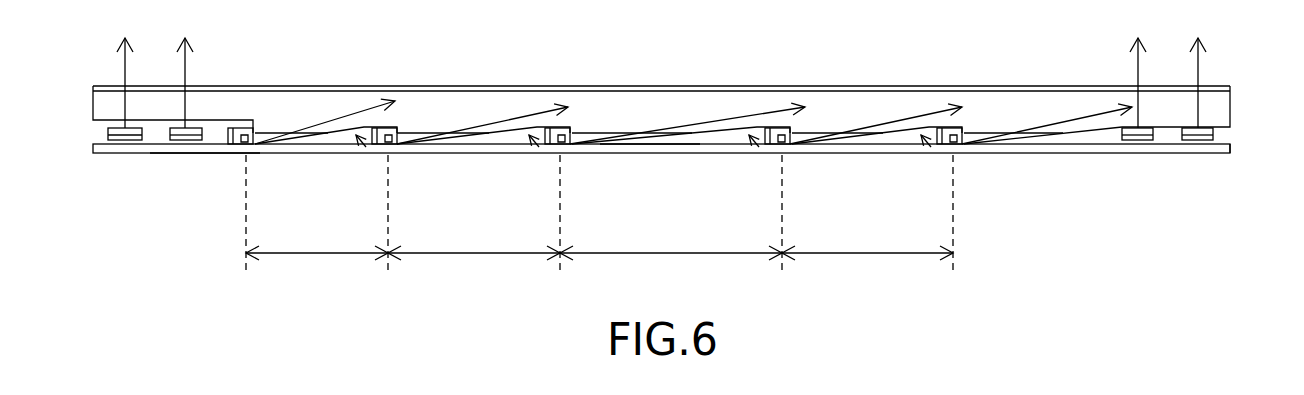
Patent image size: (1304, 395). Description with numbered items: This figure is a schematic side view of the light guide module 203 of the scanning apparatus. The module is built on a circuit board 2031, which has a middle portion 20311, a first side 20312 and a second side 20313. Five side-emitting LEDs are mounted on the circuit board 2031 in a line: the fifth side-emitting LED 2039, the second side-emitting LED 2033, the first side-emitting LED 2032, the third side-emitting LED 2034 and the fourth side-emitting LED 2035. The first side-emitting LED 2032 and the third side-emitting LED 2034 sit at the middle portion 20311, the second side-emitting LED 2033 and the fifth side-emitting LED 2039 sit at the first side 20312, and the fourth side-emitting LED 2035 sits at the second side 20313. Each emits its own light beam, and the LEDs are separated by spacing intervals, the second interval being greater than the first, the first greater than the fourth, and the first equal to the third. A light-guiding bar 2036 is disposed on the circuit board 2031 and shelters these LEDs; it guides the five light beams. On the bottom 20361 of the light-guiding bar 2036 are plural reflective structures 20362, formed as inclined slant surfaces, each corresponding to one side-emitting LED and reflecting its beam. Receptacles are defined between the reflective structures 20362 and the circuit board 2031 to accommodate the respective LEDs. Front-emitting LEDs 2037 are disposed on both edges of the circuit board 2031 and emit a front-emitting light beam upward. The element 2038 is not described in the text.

The light guide module 203 is at (663, 146).
The light-guiding bar 2036 is at (661, 144).
The bottom of the light-guiding bar 20361 is at (280, 131).
The reflective structures 20362 is at (325, 134).
The front-emitting LEDs 2037 is at (122, 143).
The fifth side-emitting LED 2039 is at (255, 146).
The second side-emitting LED 2033 is at (397, 146).
The first side-emitting LED 2032 is at (577, 146).
The third side-emitting LED 2034 is at (793, 146).
The fourth side-emitting LED 2035 is at (965, 146).
The reflective structure 2038 is at (363, 152).
The circuit board 2031 is at (1062, 150).
The middle portion of the circuit board 20311 is at (640, 149).
The first side of the circuit board 20312 is at (209, 153).
The second side of the circuit board 20313 is at (1118, 150).